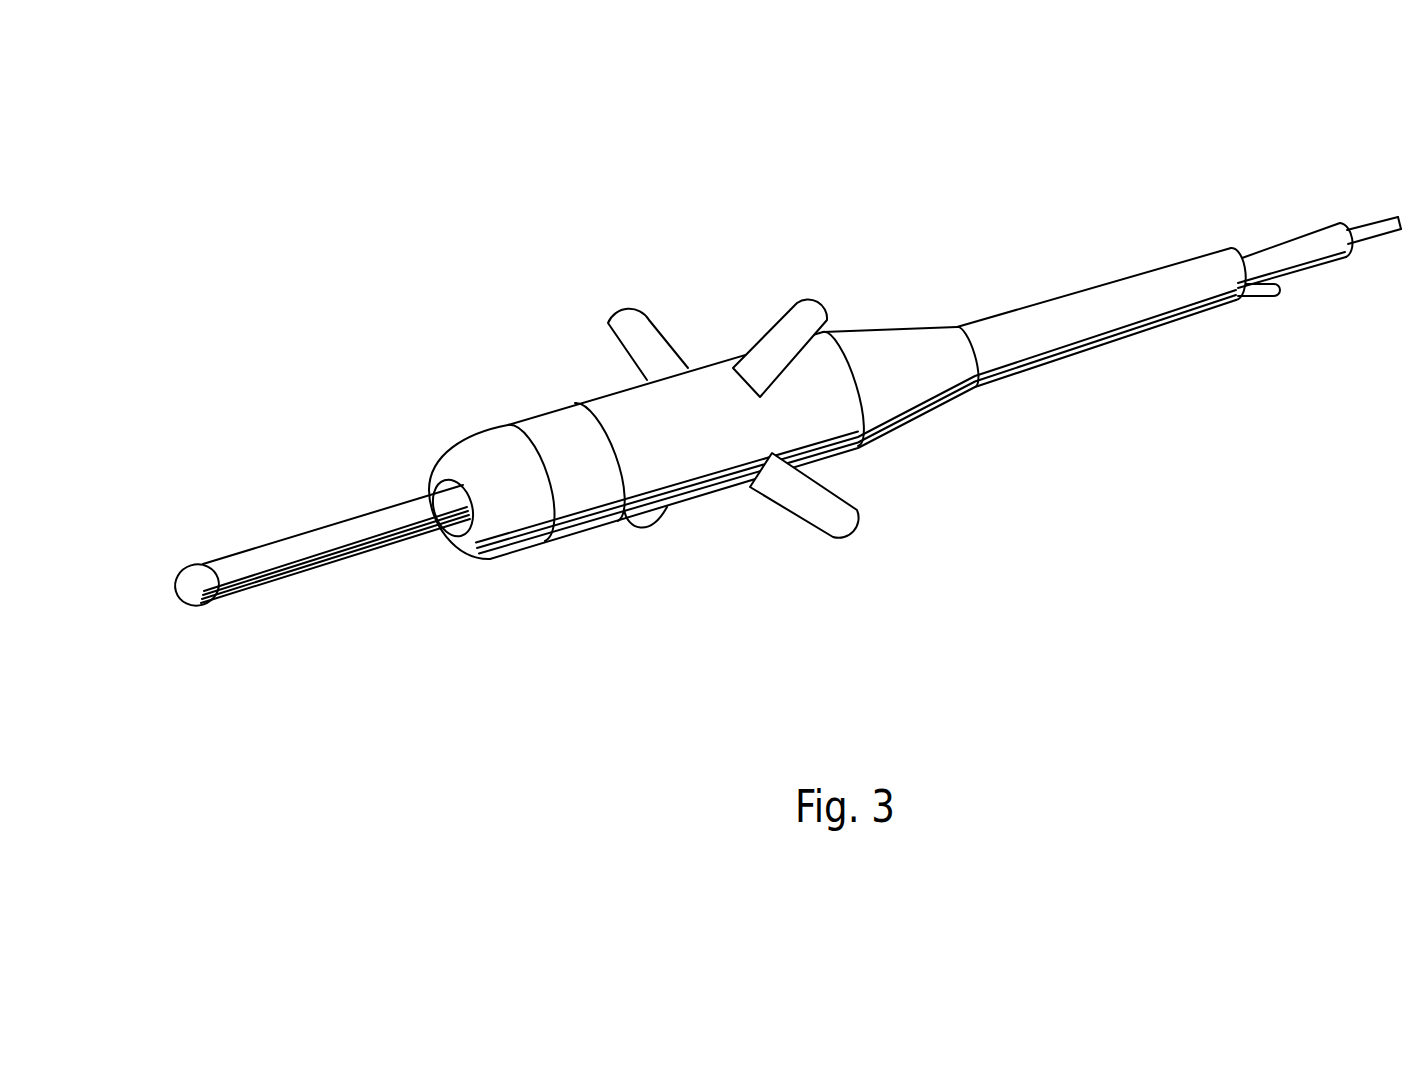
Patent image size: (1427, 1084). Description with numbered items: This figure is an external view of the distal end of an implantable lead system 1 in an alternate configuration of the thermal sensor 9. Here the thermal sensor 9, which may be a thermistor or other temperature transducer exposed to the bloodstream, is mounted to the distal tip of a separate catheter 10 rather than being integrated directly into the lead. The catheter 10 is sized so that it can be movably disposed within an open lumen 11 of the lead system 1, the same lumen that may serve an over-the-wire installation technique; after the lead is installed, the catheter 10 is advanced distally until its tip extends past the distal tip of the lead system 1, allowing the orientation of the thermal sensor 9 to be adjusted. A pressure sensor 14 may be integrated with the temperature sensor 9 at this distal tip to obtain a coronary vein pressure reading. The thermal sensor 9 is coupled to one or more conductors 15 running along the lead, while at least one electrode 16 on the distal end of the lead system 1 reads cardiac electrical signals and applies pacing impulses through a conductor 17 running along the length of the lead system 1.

The lead system 1 is at (752, 389).
The thermal sensor 9 is at (163, 631).
The pressure sensor 14 is at (203, 604).
The catheter 10 is at (727, 432).
The open lumen 11 is at (453, 539).
The conductor 15 is at (1388, 238).
The electrode 16 is at (568, 540).
The conductor 17 is at (1255, 298).